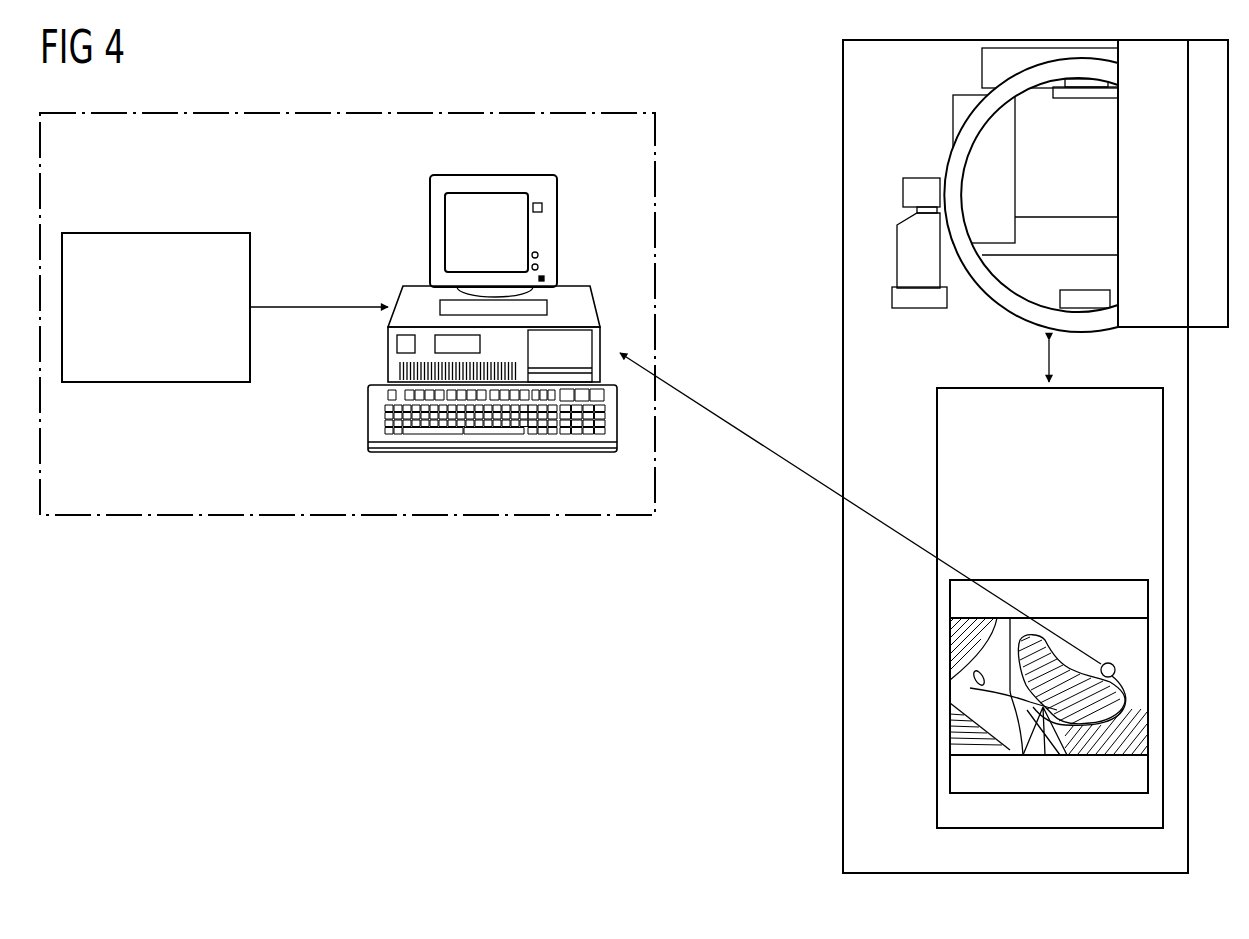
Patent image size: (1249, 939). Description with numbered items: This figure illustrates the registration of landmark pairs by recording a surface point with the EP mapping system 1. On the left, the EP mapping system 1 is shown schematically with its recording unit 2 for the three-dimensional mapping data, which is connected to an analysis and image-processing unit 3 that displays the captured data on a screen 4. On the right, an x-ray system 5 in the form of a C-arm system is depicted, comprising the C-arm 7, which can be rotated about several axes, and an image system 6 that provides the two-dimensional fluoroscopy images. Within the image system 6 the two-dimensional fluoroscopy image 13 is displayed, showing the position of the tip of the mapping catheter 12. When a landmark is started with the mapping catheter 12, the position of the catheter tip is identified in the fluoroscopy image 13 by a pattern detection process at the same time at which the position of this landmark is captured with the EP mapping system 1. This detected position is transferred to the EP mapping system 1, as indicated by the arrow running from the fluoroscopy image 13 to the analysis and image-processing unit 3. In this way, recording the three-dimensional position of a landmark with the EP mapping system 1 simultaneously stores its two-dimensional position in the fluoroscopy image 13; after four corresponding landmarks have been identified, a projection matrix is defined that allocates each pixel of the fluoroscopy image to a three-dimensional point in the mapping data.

The EP mapping system 1 is at (305, 515).
The recording unit 2 is at (155, 382).
The analysis and image-processing unit 3 is at (600, 313).
The screen 4 is at (557, 232).
The x-ray system 5 is at (842, 733).
The image system 6 is at (990, 828).
The C-arm 7 is at (958, 167).
The mapping catheter 12 is at (1150, 697).
The 2D fluoroscopy image 13 is at (1082, 797).